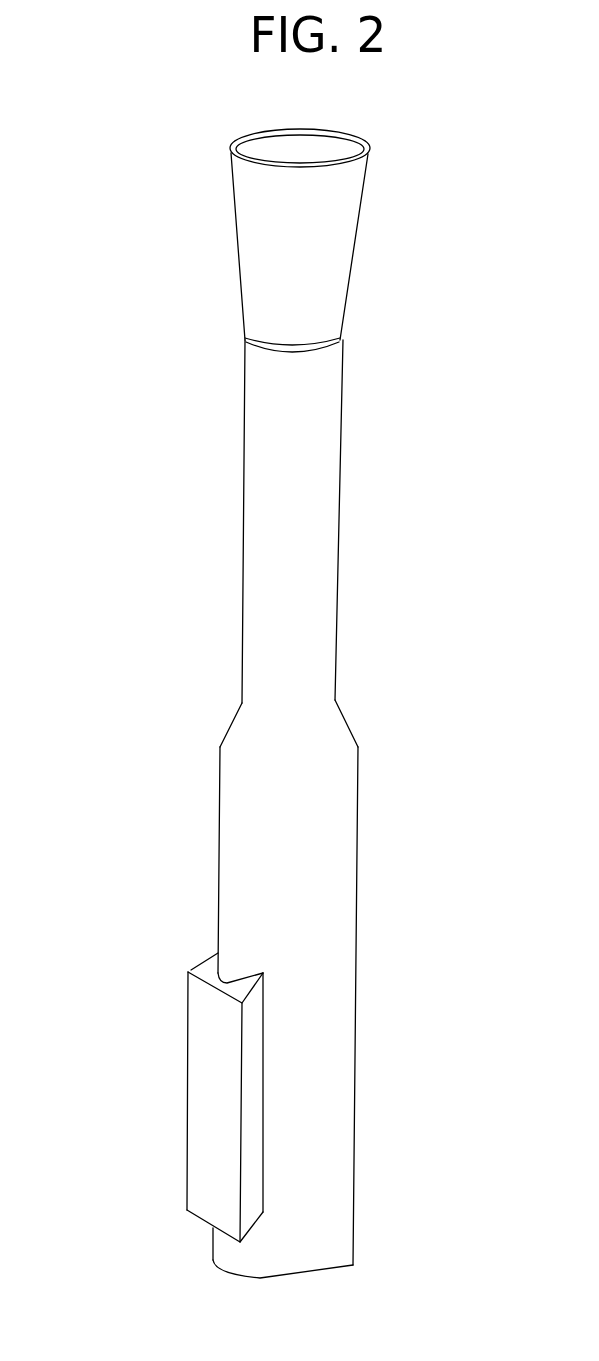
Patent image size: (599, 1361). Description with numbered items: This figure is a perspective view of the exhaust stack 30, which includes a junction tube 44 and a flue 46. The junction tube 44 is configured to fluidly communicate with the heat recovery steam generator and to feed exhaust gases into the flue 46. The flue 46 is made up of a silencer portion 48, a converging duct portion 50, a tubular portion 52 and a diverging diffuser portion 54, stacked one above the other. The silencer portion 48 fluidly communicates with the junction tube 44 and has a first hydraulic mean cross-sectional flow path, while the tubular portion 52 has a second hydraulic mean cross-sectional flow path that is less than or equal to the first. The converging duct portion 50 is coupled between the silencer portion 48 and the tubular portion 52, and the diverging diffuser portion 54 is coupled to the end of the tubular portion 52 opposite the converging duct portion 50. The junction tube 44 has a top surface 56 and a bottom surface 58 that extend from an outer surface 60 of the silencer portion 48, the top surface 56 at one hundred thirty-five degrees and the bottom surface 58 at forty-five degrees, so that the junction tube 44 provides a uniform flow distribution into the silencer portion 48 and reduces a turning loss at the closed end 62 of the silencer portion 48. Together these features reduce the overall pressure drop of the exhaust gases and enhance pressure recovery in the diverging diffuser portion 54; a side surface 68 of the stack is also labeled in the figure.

The exhaust stack 30 is at (142, 402).
The junction tube 44 is at (188, 972).
The flue 46 is at (228, 148).
The silencer portion 48 is at (466, 756).
The converging duct portion 50 is at (466, 703).
The tubular portion 52 is at (466, 348).
The diverging diffuser portion 54 is at (466, 131).
The top surface 56 is at (202, 958).
The bottom surface 58 is at (205, 1220).
The outer surface 60 is at (217, 942).
The closed end 62 is at (320, 1272).
The side surface 68 is at (357, 920).